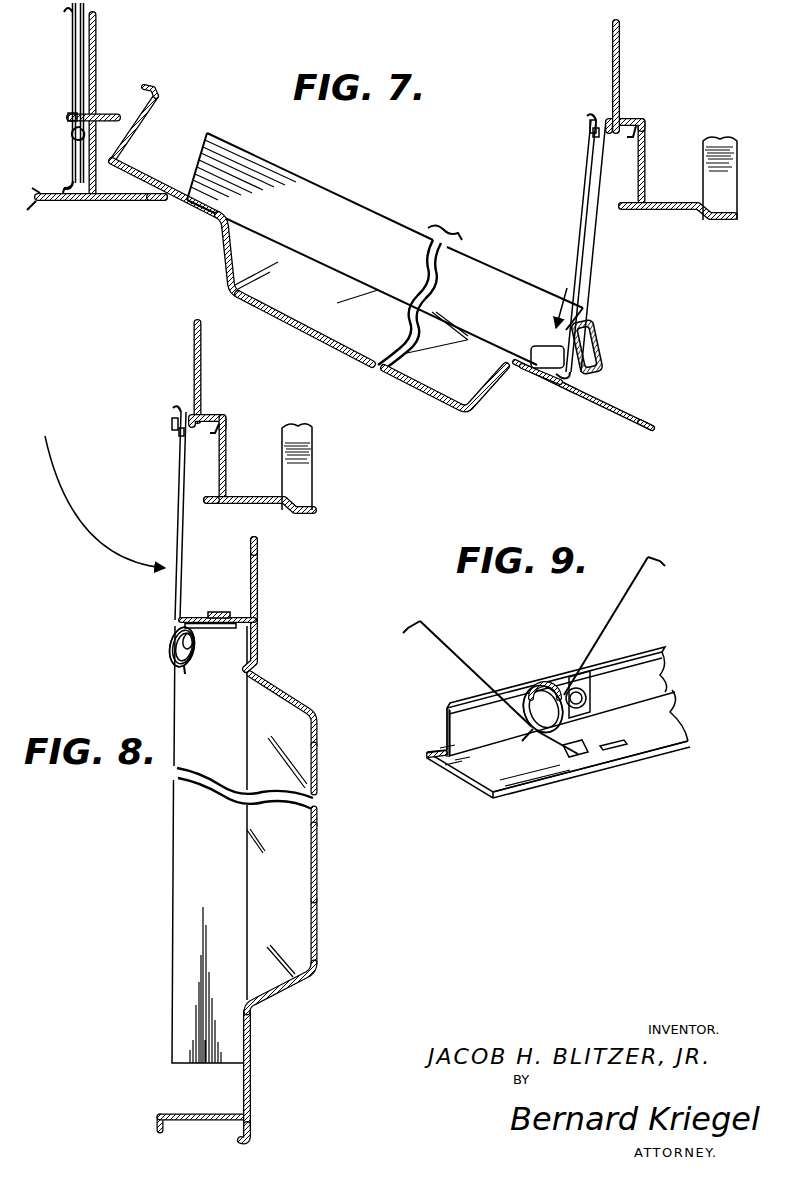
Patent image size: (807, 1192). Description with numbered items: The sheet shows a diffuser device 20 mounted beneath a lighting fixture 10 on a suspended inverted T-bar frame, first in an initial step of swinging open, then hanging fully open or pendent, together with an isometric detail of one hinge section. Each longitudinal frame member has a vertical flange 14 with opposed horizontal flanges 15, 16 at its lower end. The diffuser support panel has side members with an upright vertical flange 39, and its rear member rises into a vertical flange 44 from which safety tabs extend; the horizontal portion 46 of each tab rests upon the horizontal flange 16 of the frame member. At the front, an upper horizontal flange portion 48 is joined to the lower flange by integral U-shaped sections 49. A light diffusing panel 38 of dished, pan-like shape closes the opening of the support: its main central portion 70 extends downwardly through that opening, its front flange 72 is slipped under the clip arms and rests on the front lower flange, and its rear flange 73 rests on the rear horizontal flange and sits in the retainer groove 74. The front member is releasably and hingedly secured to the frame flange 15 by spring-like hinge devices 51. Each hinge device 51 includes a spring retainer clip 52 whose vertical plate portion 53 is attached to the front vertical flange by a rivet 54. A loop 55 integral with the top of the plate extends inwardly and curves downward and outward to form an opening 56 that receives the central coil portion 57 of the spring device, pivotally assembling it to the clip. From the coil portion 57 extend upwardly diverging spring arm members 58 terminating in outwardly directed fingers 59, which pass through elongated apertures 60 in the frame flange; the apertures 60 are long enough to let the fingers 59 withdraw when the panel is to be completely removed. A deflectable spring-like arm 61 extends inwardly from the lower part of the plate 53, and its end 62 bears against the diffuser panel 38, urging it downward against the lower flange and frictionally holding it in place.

In FIG. 7, the lighting fixture 10 is at (340, 293).
In FIG. 8, the lighting fixture 10 is at (313, 843).
In FIG. 7, the vertical flange 14 is at (621, 70).
In FIG. 8, the vertical flange 14 is at (194, 365).
In FIG. 7, the horizontal flange 15 is at (587, 126).
In FIG. 8, the horizontal flange 15 is at (172, 424).
In FIG. 7, the horizontal flange 16 is at (640, 134).
In FIG. 8, the horizontal flange 16 is at (224, 436).
In FIG. 7, the diffuser device 20 is at (220, 285).
In FIG. 8, the diffuser device 20 is at (322, 960).
In FIG. 9, the diffuser device 20 is at (552, 792).
In FIG. 7, the light diffusing panel 38 is at (453, 410).
In FIG. 8, the light diffusing panel 38 is at (322, 795).
In FIG. 7, the vertical flange 39 is at (737, 157).
In FIG. 8, the vertical flange 39 is at (204, 868).
In FIG. 7, the vertical flange 44 is at (158, 105).
In FIG. 8, the vertical flange 44 is at (182, 1113).
In FIG. 7, the horizontal portion 46 is at (147, 87).
In FIG. 8, the horizontal portion 46 is at (218, 418).
In FIG. 7, the upper horizontal flange portion 48 is at (604, 398).
In FIG. 7, the U-shaped section 49 is at (650, 432).
In FIG. 8, the U-shaped section 49 is at (262, 545).
In FIG. 7, the hinge device 51 is at (58, 158).
In FIG. 8, the hinge device 51 is at (167, 662).
In FIG. 9, the hinge device 51 is at (562, 668).
In FIG. 9, the spring retainer clip 52 is at (590, 676).
In FIG. 9, the vertical plate portion 53 is at (655, 686).
In FIG. 7, the rivet 54 is at (96, 163).
In FIG. 8, the rivet 54 is at (232, 612).
In FIG. 9, the rivet 54 is at (656, 658).
In FIG. 7, the loop 55 is at (88, 135).
In FIG. 8, the loop 55 is at (180, 634).
In FIG. 9, the loop 55 is at (532, 692).
In FIG. 8, the opening 56 is at (195, 642).
In FIG. 9, the opening 56 is at (526, 718).
In FIG. 7, the central coil portion 57 is at (64, 186).
In FIG. 8, the central coil portion 57 is at (186, 669).
In FIG. 9, the central coil portion 57 is at (537, 735).
In FIG. 7, the spring arm member 58 is at (73, 68).
In FIG. 9, the spring arm member 58 is at (637, 578).
In FIG. 7, the finger 59 is at (66, 13).
In FIG. 8, the finger 59 is at (178, 410).
In FIG. 9, the finger 59 is at (658, 560).
In FIG. 7, the aperture 60 is at (68, 115).
In FIG. 8, the aperture 60 is at (179, 437).
In FIG. 7, the spring-like arm 61 is at (543, 384).
In FIG. 9, the spring-like arm 61 is at (584, 740).
In FIG. 7, the end 62 is at (540, 358).
In FIG. 9, the end 62 is at (612, 747).
In FIG. 7, the main central portion 70 is at (345, 350).
In FIG. 8, the main central portion 70 is at (319, 831).
In FIG. 7, the front flange 72 is at (78, 203).
In FIG. 8, the front flange 72 is at (260, 640).
In FIG. 9, the front flange 72 is at (472, 768).
In FIG. 7, the rear flange 73 is at (686, 204).
In FIG. 8, the rear flange 73 is at (266, 500).
In FIG. 7, the retainer groove 74 is at (113, 201).
In FIG. 8, the retainer groove 74 is at (207, 506).